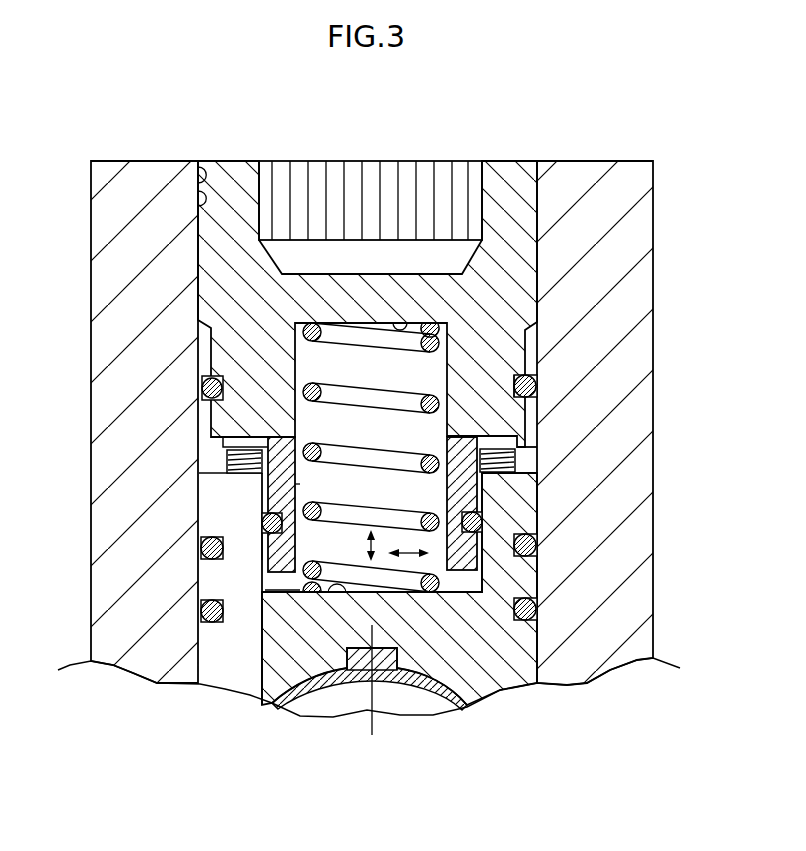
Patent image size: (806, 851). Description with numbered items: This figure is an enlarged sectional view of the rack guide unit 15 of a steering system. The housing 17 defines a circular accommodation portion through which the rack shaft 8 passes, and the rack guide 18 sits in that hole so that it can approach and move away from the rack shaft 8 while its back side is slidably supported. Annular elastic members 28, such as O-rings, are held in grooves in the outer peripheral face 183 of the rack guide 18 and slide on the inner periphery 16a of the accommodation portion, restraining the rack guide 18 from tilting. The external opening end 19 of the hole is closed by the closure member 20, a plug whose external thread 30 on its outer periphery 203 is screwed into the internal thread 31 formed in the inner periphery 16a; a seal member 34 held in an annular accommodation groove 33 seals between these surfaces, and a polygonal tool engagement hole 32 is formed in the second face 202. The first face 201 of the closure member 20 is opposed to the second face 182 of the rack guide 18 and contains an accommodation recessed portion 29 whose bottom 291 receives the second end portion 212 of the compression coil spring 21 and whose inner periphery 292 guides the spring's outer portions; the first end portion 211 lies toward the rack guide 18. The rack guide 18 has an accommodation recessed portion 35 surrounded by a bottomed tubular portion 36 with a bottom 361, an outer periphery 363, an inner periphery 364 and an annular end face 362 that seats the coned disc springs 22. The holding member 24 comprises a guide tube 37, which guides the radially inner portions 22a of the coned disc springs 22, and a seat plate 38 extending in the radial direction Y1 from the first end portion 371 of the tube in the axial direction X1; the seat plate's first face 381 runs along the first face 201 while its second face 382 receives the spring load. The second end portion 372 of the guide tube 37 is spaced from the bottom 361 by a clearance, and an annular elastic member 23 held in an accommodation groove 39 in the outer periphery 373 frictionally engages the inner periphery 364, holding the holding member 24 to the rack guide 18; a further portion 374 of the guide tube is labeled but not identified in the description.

The rack shaft 8 is at (396, 706).
The rack guide unit 15 is at (455, 150).
The inner periphery of accommodation portion 16a is at (537, 660).
The housing 17 is at (664, 572).
The rack guide 18 is at (548, 643).
The second face of rack guide 182 is at (520, 478).
The outer peripheral face of rack guide 183 is at (537, 581).
The external opening end 19 is at (211, 161).
The closure member 20 is at (548, 194).
The first face of closure member 201 is at (537, 443).
The second face of closure member 202 is at (506, 161).
The outer periphery of closure member 203 is at (198, 262).
The compression coil spring 21 is at (537, 412).
The first end portion of compression coil spring 211 is at (429, 598).
The second end portion of compression coil spring 212 is at (312, 321).
The coned disc springs 22 is at (463, 498).
The radially inner portions of coned disc springs 22a is at (440, 431).
The annular elastic member 23 is at (483, 522).
The holding member 24 is at (490, 497).
The annular elastic members 28 is at (537, 546).
The accommodation recessed portion of closure member 29 is at (310, 355).
The bottom of accommodation recessed portion 291 is at (415, 323).
The inner periphery of accommodation recessed portion 292 is at (475, 348).
The external thread 30 is at (198, 229).
The internal thread 31 is at (198, 212).
The tool engagement hole 32 is at (423, 250).
The annular accommodation groove 33 is at (200, 366).
The seal member 34 is at (537, 392).
The accommodation recessed portion of rack guide 35 is at (263, 600).
The tubular portion 36 is at (262, 563).
The bottom of tubular portion 361 is at (340, 598).
The end face of tubular portion 362 is at (225, 472).
The outer periphery of tubular portion 363 is at (223, 552).
The inner periphery of tubular portion 364 is at (255, 483).
The guide tube 37 is at (260, 513).
The first end portion of guide tube 371 is at (203, 387).
The second end portion of guide tube 372 is at (276, 594).
The outer periphery of guide tube 373 is at (200, 612).
The cup wall portion 374 is at (298, 486).
The seat plate 38 is at (245, 436).
The first face of seat plate 381 is at (275, 432).
The second face of seat plate 382 is at (215, 455).
The accommodation groove 39 is at (205, 540).
The axial direction X1 is at (369, 548).
The radial direction Y1 is at (406, 545).